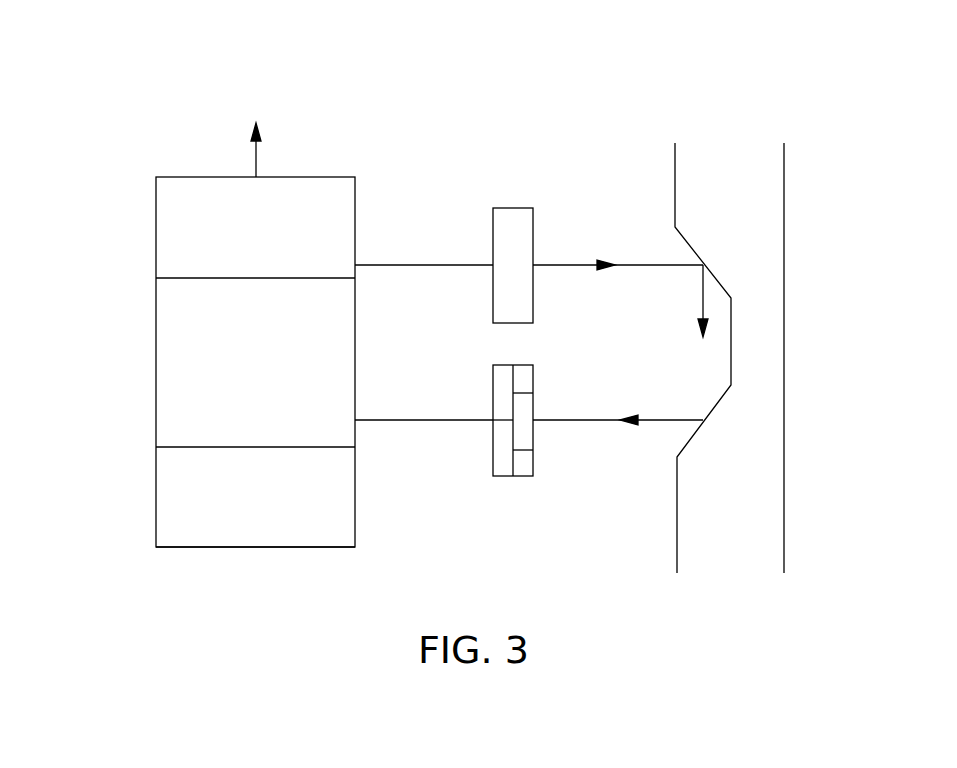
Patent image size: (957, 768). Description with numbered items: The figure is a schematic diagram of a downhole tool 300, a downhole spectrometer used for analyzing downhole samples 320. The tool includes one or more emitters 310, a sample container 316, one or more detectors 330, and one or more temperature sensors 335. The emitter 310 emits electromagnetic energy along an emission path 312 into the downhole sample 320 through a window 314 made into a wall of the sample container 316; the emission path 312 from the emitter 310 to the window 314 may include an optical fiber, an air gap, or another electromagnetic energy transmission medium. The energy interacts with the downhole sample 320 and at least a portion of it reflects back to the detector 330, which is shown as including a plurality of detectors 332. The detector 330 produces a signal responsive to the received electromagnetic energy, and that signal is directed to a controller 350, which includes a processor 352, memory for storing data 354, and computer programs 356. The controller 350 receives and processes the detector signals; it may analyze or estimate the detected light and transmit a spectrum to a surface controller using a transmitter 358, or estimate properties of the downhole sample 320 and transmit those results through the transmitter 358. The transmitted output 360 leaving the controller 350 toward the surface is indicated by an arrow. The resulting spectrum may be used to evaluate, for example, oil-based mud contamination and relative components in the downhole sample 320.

The downhole tool 300 is at (483, 150).
The emitter 310 is at (493, 278).
The emission path 312 is at (570, 263).
The window 314 is at (688, 440).
The sample container 316 is at (753, 245).
The downhole sample 320 is at (750, 178).
The detector 330 is at (522, 476).
The plurality of detectors 332 is at (533, 410).
The temperature sensor 335 is at (500, 476).
The controller 350 is at (313, 573).
The processor 352 is at (156, 490).
The memory for storing data 354 is at (156, 315).
The computer programs 356 is at (274, 376).
The transmitter 358 is at (156, 222).
The output signal 360 is at (256, 154).